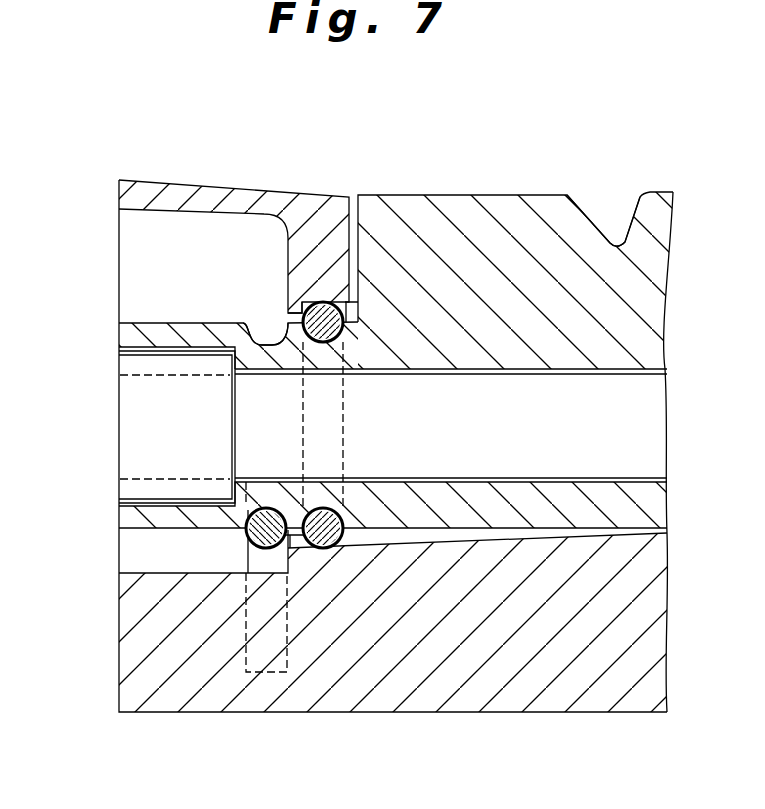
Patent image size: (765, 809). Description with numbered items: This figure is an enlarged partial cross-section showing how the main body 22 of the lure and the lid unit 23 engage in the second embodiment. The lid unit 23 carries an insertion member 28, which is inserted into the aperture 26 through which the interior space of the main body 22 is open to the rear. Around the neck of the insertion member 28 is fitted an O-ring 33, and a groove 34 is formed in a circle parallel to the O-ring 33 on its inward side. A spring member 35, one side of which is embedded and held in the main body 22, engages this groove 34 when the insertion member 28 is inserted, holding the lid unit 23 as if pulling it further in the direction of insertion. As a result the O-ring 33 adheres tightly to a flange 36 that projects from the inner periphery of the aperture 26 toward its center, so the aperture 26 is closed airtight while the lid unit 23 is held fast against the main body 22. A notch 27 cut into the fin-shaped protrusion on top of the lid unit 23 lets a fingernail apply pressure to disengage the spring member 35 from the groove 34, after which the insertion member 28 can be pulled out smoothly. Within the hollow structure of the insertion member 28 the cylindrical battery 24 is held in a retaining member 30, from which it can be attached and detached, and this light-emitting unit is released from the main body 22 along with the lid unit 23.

The main body 22 is at (162, 181).
The lid unit 23 is at (400, 217).
The battery 24 is at (636, 447).
The aperture 26 is at (348, 300).
The notch 27 is at (628, 212).
The insertion member 28 is at (150, 323).
The retaining member 30 is at (147, 438).
The O-ring 33 is at (326, 335).
The groove 34 is at (257, 328).
The spring member 35 is at (247, 540).
The flange 36 is at (293, 312).